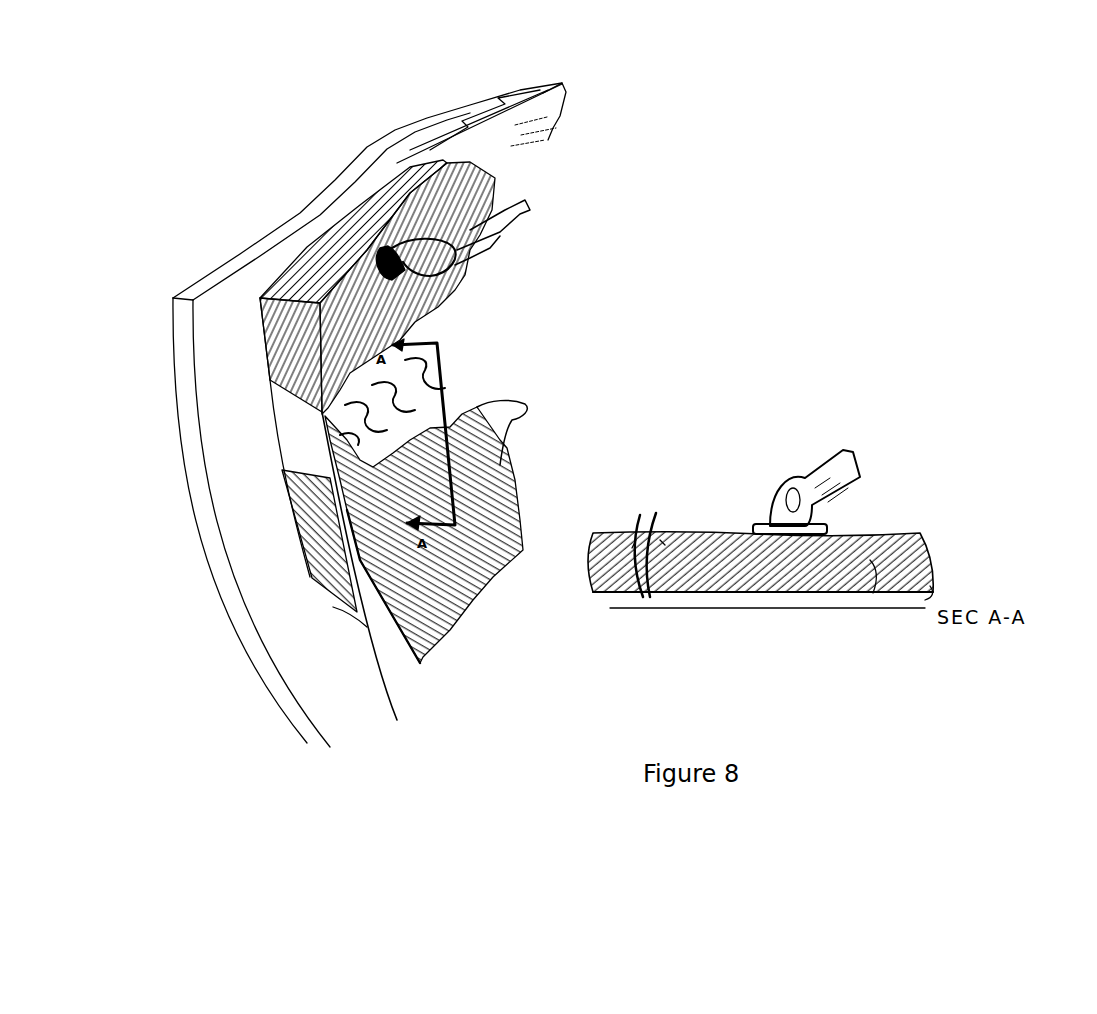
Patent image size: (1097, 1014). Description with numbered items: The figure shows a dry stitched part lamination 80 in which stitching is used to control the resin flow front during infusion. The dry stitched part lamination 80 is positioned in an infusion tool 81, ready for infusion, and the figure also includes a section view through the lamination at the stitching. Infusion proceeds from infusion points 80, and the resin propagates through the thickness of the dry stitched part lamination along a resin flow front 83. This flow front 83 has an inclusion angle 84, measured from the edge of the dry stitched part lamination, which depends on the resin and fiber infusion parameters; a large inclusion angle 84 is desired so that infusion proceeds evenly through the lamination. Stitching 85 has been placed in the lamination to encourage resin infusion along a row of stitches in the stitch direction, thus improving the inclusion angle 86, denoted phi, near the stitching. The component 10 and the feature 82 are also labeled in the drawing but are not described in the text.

The fastener 10 is at (817, 470).
The dry stitched part lamination 80 is at (440, 143).
The infusion tool 81 is at (277, 668).
The mounting block fastener 82 is at (477, 230).
The resin flow front 83 is at (480, 560).
The inclusion angle 84 is at (390, 672).
The stitching 85 is at (500, 352).
The inclusion angle near the stitching 86 is at (655, 588).